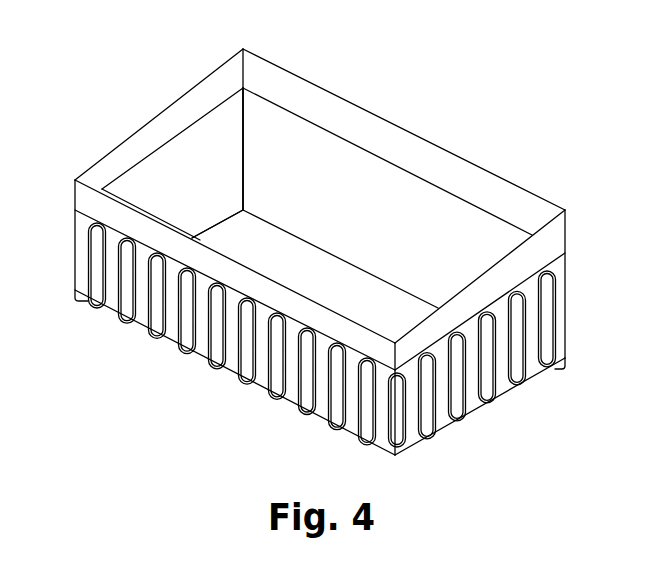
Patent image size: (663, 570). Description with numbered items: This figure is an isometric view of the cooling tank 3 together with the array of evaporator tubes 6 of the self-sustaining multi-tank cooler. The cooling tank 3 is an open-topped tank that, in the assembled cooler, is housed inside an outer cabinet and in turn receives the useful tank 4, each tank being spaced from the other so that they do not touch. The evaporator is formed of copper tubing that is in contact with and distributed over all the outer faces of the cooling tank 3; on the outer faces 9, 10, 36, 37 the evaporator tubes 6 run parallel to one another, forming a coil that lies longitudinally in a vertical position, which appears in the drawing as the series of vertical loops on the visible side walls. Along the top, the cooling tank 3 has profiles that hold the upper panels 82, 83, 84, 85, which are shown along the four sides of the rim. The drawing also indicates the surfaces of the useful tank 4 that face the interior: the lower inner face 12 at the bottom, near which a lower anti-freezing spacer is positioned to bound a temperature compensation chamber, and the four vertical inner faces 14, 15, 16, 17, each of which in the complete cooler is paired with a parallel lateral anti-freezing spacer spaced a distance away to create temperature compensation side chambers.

The cooling tank 3 is at (198, 74).
The useful tank 4 is at (505, 180).
The evaporator tubes 6 is at (272, 348).
The outer face 9 is at (140, 127).
The outer face 10 is at (80, 253).
The lower inner face 12 is at (277, 257).
The vertical inner face 14 is at (168, 182).
The vertical inner face 15 is at (282, 137).
The vertical inner face 16 is at (463, 290).
The vertical inner face 17 is at (335, 310).
The outer face 36 is at (422, 135).
The outer face 37 is at (558, 317).
The upper panel 82 is at (88, 205).
The upper panel 83 is at (182, 118).
The upper panel 84 is at (355, 130).
The upper panel 85 is at (530, 258).